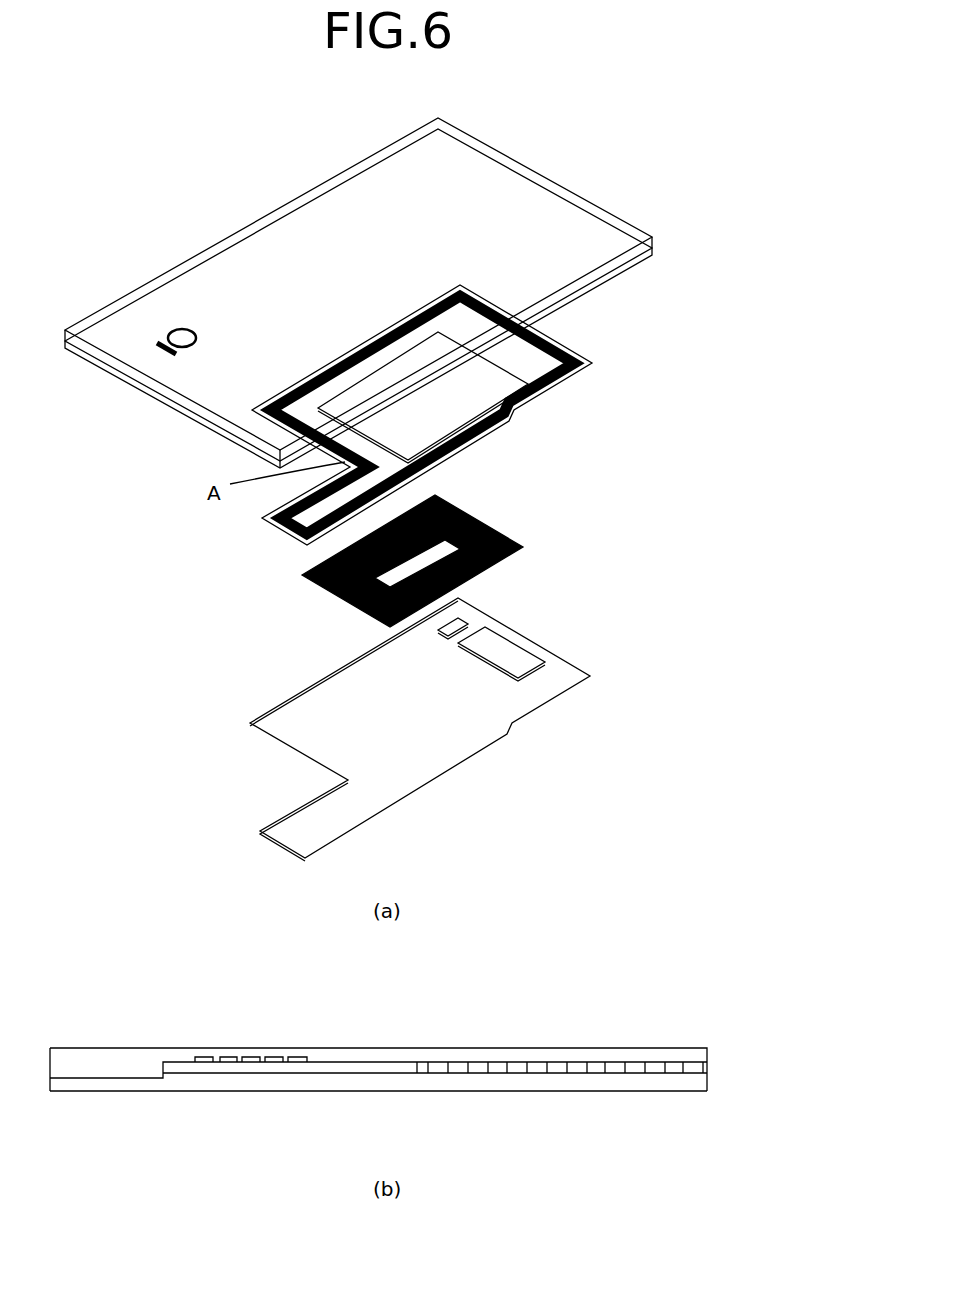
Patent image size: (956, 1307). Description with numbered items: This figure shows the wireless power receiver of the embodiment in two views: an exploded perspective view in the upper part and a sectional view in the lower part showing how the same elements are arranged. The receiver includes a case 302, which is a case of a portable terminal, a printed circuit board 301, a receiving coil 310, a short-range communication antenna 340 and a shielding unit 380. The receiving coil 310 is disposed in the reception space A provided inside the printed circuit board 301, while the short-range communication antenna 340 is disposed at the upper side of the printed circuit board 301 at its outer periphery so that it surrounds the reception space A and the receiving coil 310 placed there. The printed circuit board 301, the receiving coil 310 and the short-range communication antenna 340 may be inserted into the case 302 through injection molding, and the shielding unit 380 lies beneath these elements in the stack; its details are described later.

The case 302 is at (553, 181).
The printed circuit board 301 is at (592, 363).
The short-range communication antenna 340 is at (572, 356).
The receiving coil 310 is at (523, 548).
The shielding unit 380 is at (557, 687).